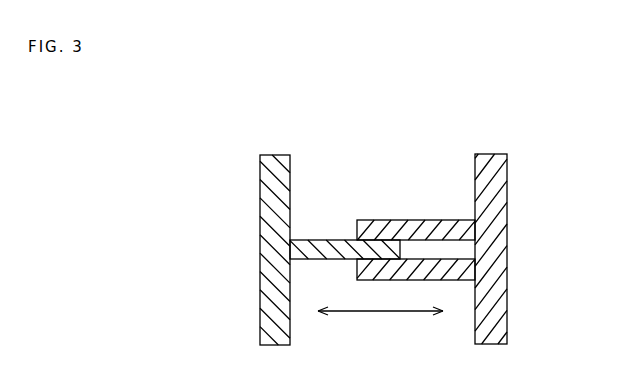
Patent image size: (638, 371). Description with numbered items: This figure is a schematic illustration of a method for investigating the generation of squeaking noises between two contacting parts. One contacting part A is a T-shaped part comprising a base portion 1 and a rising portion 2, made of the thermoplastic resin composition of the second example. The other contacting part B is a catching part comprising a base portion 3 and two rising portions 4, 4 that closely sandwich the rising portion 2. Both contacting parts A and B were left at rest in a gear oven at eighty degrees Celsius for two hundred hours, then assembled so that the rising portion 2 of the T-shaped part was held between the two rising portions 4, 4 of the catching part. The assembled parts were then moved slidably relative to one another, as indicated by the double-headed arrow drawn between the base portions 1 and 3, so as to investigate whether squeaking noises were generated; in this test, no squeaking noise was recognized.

The base portion 1 is at (268, 280).
The rising portion 2 is at (321, 250).
The base portion 3 is at (498, 283).
The rising portion 4 is at (412, 220).
The contacting part A is at (258, 149).
The contacting part B is at (506, 141).